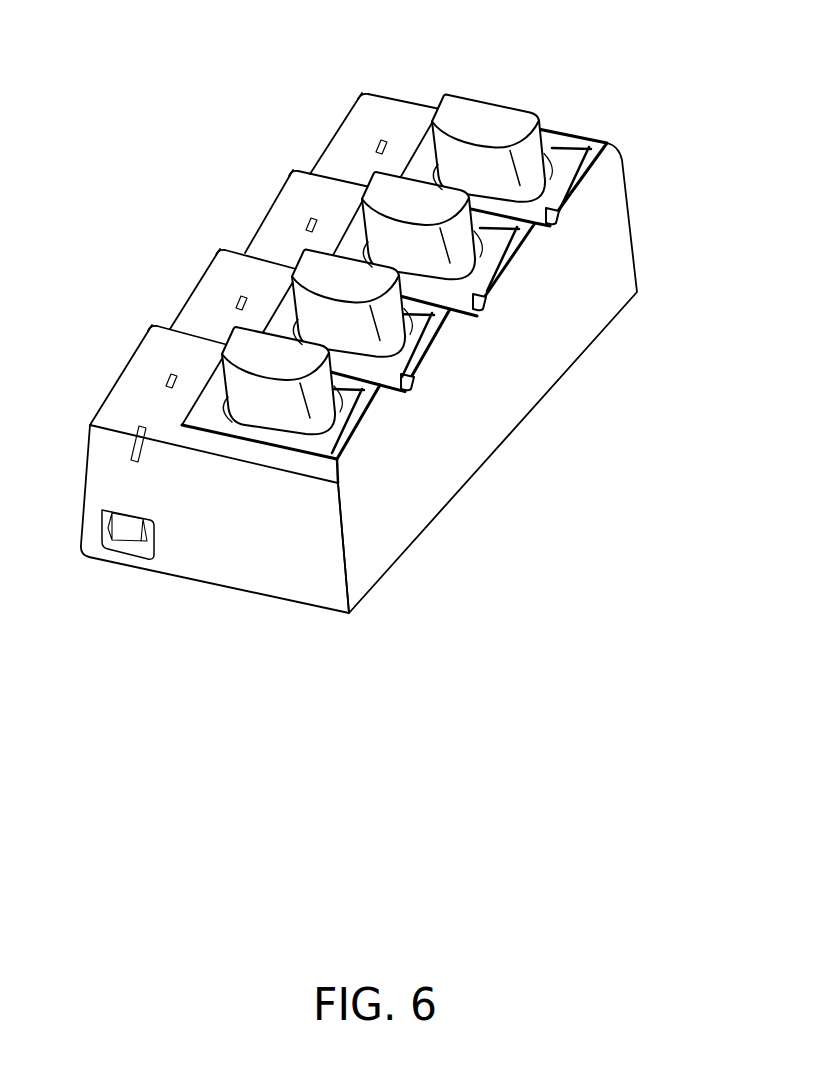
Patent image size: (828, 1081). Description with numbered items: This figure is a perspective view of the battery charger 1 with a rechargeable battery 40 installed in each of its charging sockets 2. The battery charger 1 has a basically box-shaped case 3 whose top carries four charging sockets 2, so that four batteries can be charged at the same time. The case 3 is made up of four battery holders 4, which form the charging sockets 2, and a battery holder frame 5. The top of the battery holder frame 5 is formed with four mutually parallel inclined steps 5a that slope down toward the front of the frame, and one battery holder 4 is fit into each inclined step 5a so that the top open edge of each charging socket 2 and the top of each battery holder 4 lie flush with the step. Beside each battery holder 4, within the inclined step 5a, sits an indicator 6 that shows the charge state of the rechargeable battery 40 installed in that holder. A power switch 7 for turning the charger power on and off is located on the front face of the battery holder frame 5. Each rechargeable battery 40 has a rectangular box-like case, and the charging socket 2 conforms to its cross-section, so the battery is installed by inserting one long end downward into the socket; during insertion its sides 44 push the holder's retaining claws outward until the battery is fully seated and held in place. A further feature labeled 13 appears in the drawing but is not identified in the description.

The battery charger 1 is at (398, 102).
The charging socket 2 is at (558, 140).
The battery charger case 3 is at (366, 92).
The battery holder 4 is at (575, 147).
The battery holder frame 5 is at (618, 212).
The inclined step 5a is at (345, 148).
The indicator 6 is at (372, 142).
The power switch 7 is at (122, 556).
The inner frame 13 is at (592, 143).
The rechargeable battery 40 is at (392, 168).
The side 44 is at (546, 182).